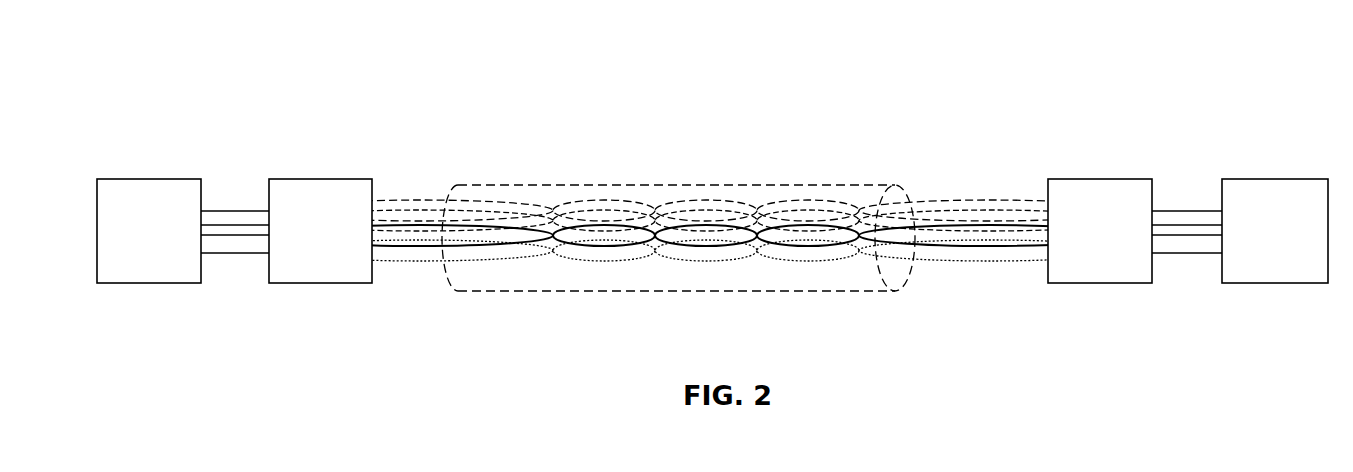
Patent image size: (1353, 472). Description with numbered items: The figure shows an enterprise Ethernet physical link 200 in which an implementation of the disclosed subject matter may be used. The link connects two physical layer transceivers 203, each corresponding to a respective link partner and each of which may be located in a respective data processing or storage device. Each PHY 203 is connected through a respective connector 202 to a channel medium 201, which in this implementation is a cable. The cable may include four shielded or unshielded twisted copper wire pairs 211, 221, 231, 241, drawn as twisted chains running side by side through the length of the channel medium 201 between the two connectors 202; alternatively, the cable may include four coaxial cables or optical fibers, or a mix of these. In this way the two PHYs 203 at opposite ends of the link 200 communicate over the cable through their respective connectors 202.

The enterprise Ethernet physical link 200 is at (166, 100).
The channel medium 201 is at (768, 185).
The connector 202 is at (338, 179).
The physical layer transceiver 203 is at (167, 179).
The twisted copper wire pair 211 is at (937, 263).
The twisted copper wire pair 221 is at (1013, 247).
The twisted copper wire pair 231 is at (933, 210).
The twisted copper wire pair 241 is at (983, 198).